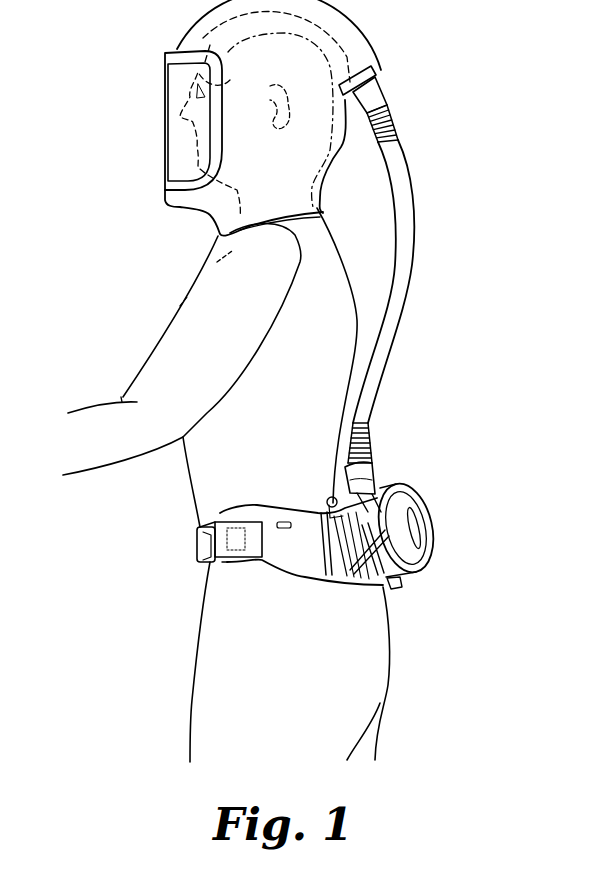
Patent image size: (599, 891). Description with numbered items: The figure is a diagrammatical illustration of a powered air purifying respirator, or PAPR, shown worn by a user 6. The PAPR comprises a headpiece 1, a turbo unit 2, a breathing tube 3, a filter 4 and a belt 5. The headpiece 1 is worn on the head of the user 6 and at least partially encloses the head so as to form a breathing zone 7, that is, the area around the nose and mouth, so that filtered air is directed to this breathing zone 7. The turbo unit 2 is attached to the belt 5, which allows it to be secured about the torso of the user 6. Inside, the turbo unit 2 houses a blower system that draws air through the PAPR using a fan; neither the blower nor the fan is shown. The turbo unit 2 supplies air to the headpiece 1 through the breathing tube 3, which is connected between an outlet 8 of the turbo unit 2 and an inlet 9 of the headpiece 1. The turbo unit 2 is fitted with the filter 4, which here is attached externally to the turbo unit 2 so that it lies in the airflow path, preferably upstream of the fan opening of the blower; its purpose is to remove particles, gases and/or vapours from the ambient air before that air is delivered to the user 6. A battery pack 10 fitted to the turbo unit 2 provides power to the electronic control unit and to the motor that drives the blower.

The headpiece 1 is at (348, 33).
The turbo unit 2 is at (377, 532).
The breathing tube 3 is at (407, 225).
The filter 4 is at (413, 520).
The belt 5 is at (290, 556).
The user 6 is at (343, 363).
The breathing zone 7 is at (181, 150).
The outlet 8 is at (367, 475).
The inlet 9 is at (368, 93).
The battery pack 10 is at (402, 585).